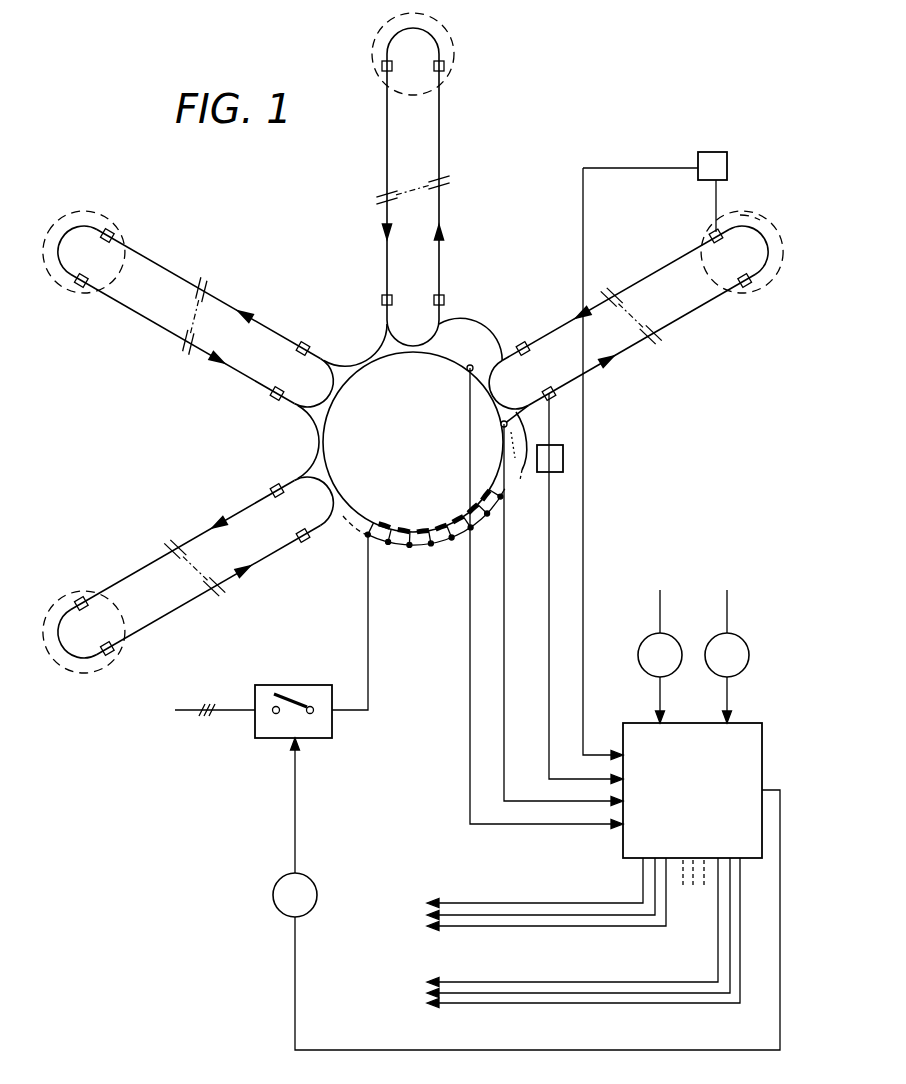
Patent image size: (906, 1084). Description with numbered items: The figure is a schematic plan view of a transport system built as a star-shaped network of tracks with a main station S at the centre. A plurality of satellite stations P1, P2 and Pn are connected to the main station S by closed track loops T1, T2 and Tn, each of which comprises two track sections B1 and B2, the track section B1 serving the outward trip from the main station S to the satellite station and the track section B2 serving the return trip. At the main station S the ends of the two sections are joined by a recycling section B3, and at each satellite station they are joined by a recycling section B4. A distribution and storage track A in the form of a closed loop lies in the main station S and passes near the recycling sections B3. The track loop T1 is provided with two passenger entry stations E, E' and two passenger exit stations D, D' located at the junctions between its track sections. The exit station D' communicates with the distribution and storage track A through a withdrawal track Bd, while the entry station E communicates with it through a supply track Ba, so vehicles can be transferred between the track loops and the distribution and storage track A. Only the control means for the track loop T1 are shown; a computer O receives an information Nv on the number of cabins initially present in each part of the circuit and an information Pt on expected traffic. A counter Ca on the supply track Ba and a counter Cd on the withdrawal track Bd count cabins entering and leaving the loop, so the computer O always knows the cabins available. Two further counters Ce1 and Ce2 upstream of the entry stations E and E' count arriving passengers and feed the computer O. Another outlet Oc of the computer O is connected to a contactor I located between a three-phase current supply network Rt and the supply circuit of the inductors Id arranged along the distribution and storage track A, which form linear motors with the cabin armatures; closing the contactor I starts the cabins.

The main station S is at (413, 442).
The track loop T2 is at (428, 179).
The satellite station P2 is at (413, 54).
The track loop Tn is at (205, 567).
The satellite station Pn is at (84, 632).
The track loop T1 is at (630, 317).
The satellite station P1 is at (742, 252).
The track section B1 is at (690, 313).
The track section B2 is at (550, 332).
The recycling section B3 is at (499, 398).
The recycling section B4 is at (746, 212).
The passenger exit station D is at (746, 302).
The passenger exit station D' is at (515, 331).
The passenger entry station E is at (557, 410).
The passenger entry station E' is at (695, 227).
The withdrawal track Bd is at (471, 364).
The supply track Ba is at (522, 472).
The counter Cd is at (467, 371).
The counter Ca is at (500, 425).
The distribution and storage track A is at (334, 402).
The inductors Id is at (412, 528).
The counter Ce1 is at (563, 458).
The counter Ce2 is at (709, 151).
The contactor I is at (304, 683).
The three-phase current supply network Rt is at (182, 712).
The outlet Oc is at (295, 895).
The information relating to the number of cabins Nv is at (660, 656).
The information relating to the amount of expected traffic Pt is at (727, 656).
The computer O is at (692, 790).